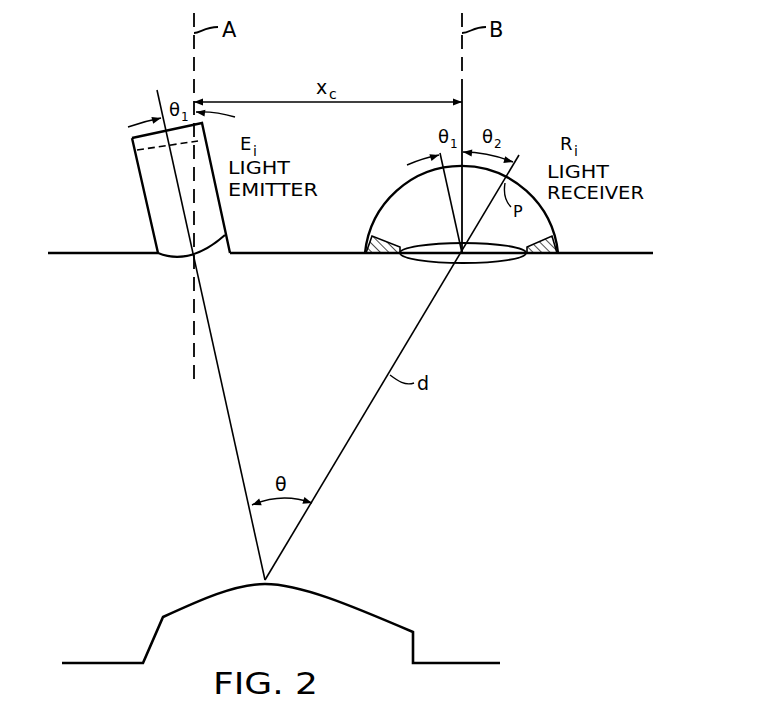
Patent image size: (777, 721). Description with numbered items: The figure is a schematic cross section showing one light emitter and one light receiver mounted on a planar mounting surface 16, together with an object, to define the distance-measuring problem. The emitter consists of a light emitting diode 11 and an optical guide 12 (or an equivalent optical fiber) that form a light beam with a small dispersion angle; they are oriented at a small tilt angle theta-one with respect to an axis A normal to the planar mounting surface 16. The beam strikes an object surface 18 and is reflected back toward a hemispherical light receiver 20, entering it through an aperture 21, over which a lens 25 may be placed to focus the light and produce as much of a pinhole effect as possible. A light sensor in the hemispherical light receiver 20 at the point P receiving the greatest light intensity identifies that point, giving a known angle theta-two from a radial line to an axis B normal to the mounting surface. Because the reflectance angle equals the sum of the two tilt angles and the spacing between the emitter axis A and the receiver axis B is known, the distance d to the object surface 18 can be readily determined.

The light emitting diode 11 is at (137, 147).
The optical guide 12 is at (146, 207).
The planar mounting surface 16 is at (96, 255).
The object surface 18 is at (352, 608).
The hemispherical light receiver 20 is at (550, 217).
The aperture 21 is at (400, 254).
The lens 25 is at (477, 255).